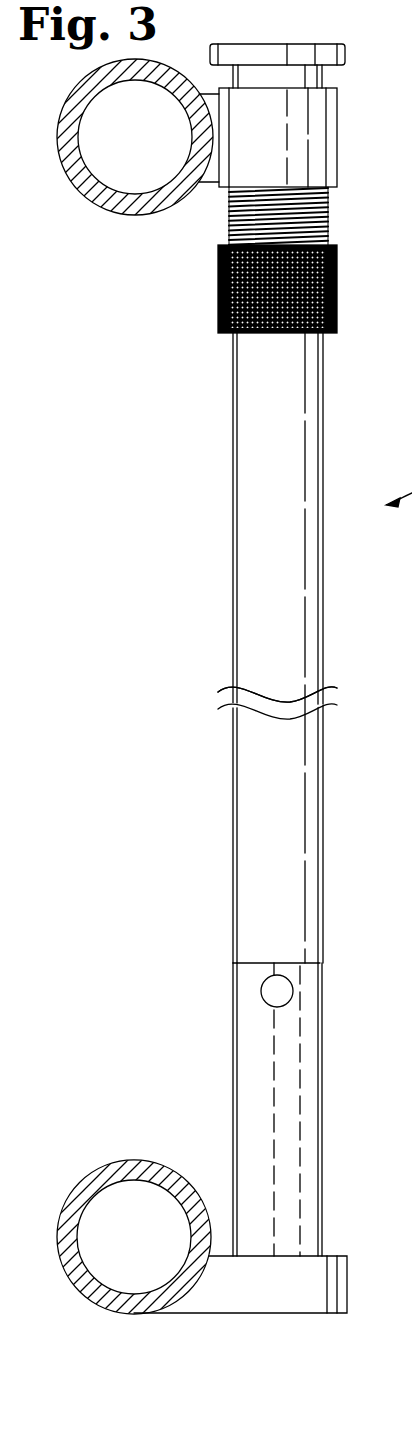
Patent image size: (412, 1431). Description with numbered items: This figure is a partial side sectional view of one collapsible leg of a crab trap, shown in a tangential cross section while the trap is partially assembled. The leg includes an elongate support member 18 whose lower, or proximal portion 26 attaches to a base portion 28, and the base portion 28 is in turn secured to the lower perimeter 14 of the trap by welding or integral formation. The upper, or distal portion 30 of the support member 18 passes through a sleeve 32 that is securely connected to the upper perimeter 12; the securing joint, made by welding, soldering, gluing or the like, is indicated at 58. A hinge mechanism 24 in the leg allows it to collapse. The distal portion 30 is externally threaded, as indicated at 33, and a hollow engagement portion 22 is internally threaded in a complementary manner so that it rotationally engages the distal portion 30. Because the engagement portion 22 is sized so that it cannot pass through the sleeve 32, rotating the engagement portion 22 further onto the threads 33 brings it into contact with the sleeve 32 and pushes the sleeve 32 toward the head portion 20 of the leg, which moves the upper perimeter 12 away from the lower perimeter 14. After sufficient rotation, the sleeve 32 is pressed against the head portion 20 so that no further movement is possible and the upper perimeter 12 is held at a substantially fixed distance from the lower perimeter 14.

The upper perimeter 12 is at (133, 216).
The lower perimeter 14 is at (133, 1162).
The elongate support member 18 is at (323, 625).
The head portion 20 is at (262, 44).
The engagement portion 22 is at (338, 285).
The hinge mechanism 24 is at (323, 990).
The proximal portion 26 is at (323, 1072).
The base portion 28 is at (247, 1300).
The distal portion 30 is at (323, 550).
The sleeve 32 is at (338, 138).
The external threads 33 is at (329, 225).
The weld 58 is at (210, 184).